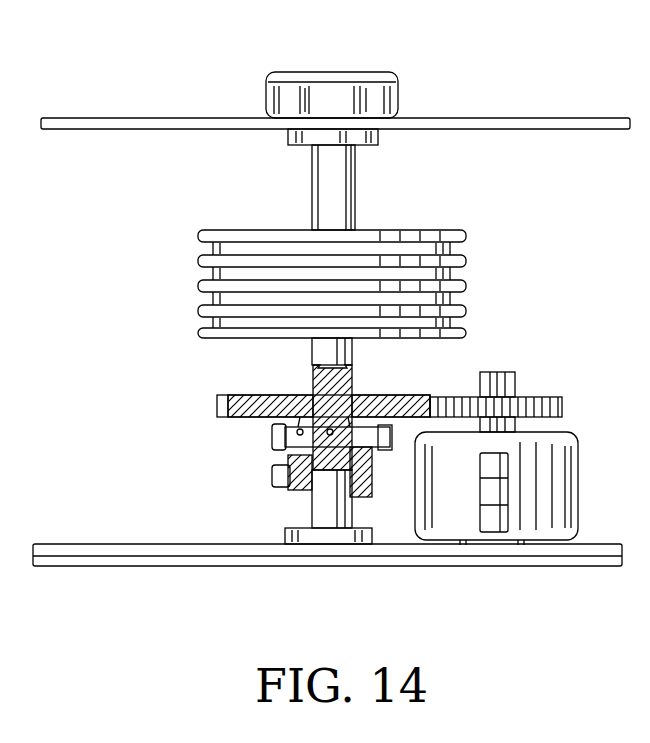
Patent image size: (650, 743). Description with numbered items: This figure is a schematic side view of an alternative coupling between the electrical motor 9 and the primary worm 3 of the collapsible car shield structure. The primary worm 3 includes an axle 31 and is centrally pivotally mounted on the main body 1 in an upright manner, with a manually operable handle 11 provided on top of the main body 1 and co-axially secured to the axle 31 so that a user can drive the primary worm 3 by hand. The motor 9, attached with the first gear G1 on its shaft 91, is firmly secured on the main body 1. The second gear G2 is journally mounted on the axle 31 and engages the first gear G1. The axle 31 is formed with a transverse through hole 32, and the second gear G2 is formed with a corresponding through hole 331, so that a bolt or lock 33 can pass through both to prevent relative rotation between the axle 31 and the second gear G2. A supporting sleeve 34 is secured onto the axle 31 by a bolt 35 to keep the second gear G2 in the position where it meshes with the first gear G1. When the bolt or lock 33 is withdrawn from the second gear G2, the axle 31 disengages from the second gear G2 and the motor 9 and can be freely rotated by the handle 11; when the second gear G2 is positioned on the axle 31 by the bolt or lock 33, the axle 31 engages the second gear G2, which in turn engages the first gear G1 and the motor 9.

The main body 1 is at (567, 122).
The manually operable handle 11 is at (306, 100).
The primary worm 3 is at (415, 232).
The axle 31 is at (326, 180).
The transverse through hole 32 is at (345, 415).
The bolt or lock 33 is at (272, 437).
The through hole 331 is at (310, 417).
The supporting sleeve 34 is at (368, 490).
The bolt 35 is at (272, 478).
The electrical motor 9 is at (563, 470).
The shaft 91 is at (498, 372).
The first gear G1 is at (562, 400).
The second gear G2 is at (230, 398).